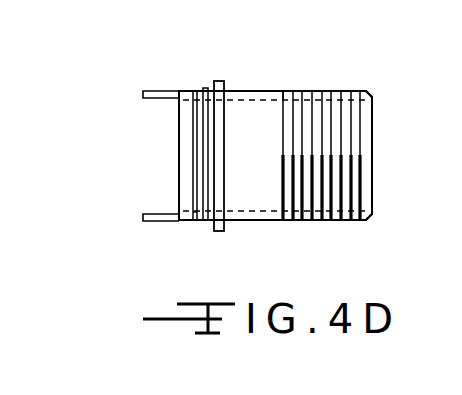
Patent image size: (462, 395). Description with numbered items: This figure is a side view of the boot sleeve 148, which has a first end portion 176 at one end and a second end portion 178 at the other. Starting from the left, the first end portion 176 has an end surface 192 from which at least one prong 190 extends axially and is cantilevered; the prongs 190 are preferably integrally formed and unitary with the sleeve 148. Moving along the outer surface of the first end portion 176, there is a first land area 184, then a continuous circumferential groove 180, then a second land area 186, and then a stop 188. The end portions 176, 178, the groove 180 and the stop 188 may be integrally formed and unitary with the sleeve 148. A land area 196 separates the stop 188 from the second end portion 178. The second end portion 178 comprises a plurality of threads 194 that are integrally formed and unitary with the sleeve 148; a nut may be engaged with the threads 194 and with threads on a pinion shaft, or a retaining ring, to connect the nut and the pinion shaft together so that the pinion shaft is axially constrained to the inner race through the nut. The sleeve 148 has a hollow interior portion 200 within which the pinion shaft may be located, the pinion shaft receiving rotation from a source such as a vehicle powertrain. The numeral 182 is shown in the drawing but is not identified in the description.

The boot sleeve 148 is at (284, 91).
The first end portion 176 is at (196, 88).
The second end portion 178 is at (303, 232).
The groove 180 is at (200, 223).
The bottom wall 182 is at (262, 228).
The first land area 184 is at (176, 88).
The second land area 186 is at (207, 86).
The stop 188 is at (222, 80).
The prong 190 is at (153, 99).
The end surface 192 is at (179, 178).
The threads 194 is at (350, 90).
The land area 196 is at (283, 133).
The hollow interior portion 200 is at (246, 157).